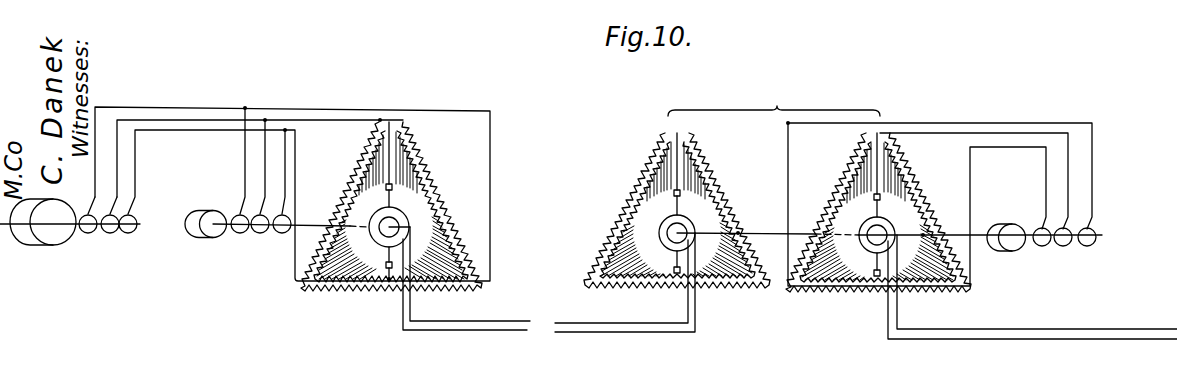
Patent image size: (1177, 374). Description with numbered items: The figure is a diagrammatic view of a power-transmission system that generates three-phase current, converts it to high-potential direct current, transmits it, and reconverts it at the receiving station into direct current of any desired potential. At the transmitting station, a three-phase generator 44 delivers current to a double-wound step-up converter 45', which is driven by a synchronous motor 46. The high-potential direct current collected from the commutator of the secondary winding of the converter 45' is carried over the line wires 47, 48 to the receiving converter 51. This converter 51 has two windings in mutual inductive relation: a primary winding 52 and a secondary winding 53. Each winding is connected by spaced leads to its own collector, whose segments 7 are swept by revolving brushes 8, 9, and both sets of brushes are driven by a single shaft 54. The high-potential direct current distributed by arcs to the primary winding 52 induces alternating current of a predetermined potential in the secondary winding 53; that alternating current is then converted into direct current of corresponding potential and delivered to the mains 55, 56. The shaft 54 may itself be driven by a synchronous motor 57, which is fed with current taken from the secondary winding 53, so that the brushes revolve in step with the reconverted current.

The three-phase generator 44 is at (65, 240).
The synchronous motor 46 is at (214, 239).
The double-wound step-up converter 45' is at (391, 206).
The line wire 47 is at (513, 318).
The line wire 48 is at (523, 330).
The converter 51 is at (774, 102).
The primary winding 52 is at (653, 172).
The secondary winding 53 is at (853, 171).
The segments 7 is at (636, 210).
The revolving brush 8 is at (680, 194).
The revolving brush 9 is at (674, 269).
The shaft 54 is at (802, 232).
The main 55 is at (1067, 329).
The main 56 is at (1077, 340).
The synchronous motor 57 is at (1012, 218).